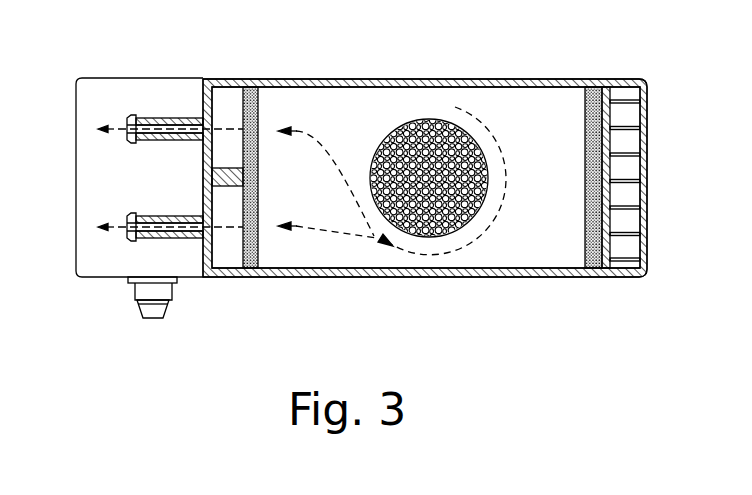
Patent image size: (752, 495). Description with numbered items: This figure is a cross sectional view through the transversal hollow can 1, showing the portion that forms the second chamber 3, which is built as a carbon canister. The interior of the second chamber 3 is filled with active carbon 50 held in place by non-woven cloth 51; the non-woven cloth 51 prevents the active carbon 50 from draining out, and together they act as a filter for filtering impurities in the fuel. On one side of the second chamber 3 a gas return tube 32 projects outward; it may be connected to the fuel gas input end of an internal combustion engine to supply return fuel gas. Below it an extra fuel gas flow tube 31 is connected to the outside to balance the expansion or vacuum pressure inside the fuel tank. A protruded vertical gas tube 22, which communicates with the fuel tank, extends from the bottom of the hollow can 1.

The transversal hollow can 1 is at (442, 79).
The second chamber 3 is at (517, 253).
The gas tube 22 is at (156, 319).
The fuel gas flow tube 31 is at (155, 239).
The gas return tube 32 is at (157, 117).
The active carbon 50 is at (463, 224).
The non-woven cloth 51 is at (583, 253).